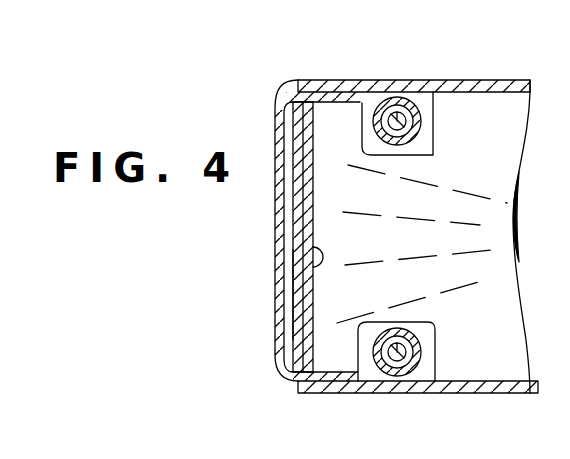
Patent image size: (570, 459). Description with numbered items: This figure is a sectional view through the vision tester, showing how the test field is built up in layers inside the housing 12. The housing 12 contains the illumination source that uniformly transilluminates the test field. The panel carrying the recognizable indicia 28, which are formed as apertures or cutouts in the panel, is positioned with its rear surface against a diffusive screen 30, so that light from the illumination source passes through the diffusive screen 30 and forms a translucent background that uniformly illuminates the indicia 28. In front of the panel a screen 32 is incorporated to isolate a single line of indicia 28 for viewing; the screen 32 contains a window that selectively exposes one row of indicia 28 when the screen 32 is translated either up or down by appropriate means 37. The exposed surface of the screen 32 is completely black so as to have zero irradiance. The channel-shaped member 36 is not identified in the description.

The housing 12 is at (441, 82).
The indicia 28 is at (297, 182).
The diffusive screen 30 is at (318, 262).
The screen 32 is at (290, 312).
The channel 36 is at (274, 160).
The means 37 is at (434, 114).